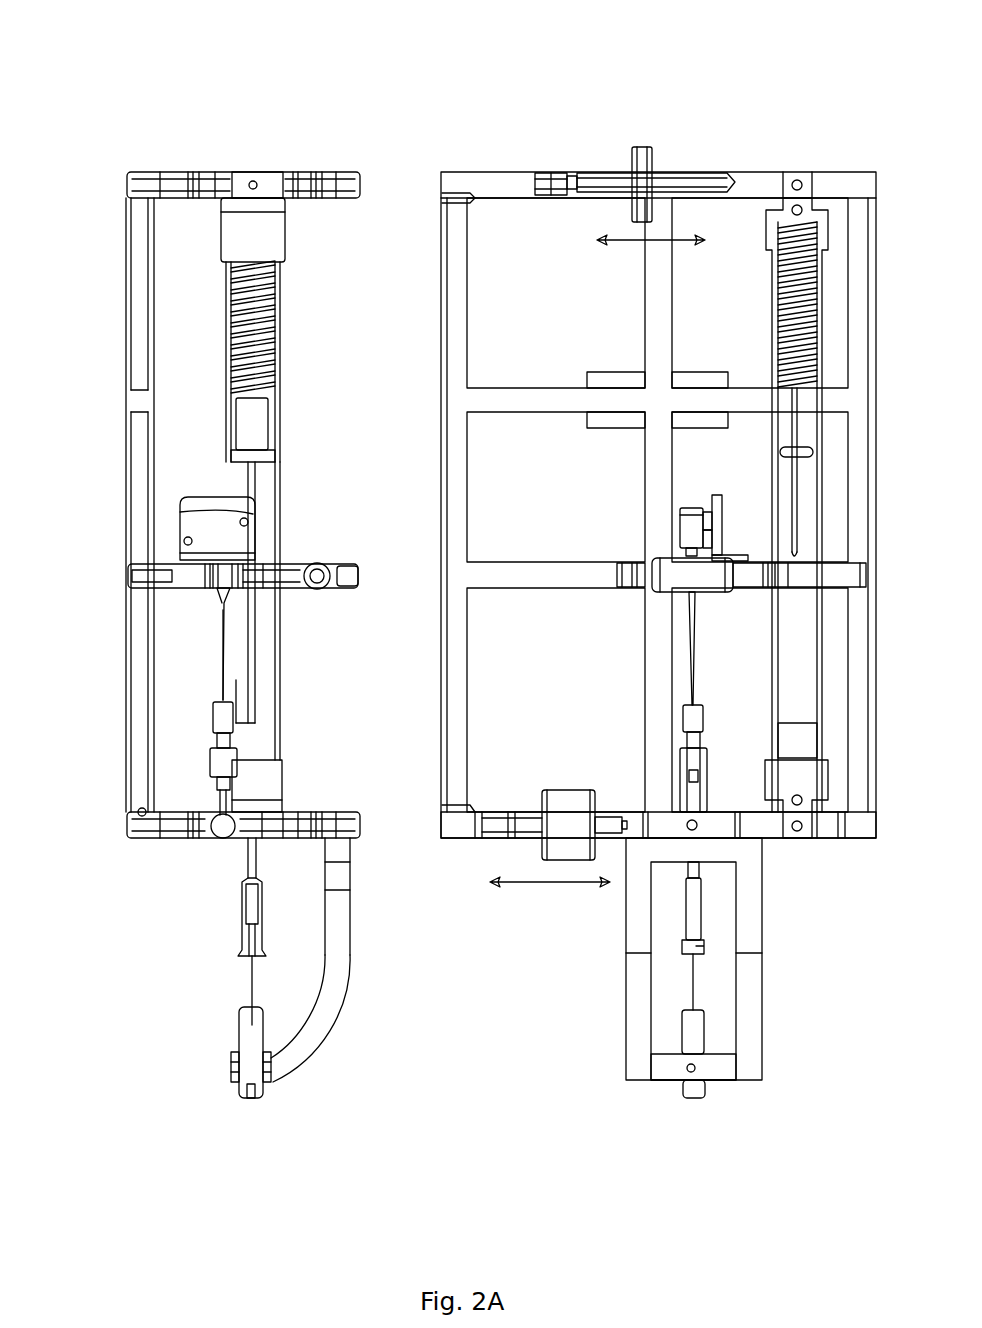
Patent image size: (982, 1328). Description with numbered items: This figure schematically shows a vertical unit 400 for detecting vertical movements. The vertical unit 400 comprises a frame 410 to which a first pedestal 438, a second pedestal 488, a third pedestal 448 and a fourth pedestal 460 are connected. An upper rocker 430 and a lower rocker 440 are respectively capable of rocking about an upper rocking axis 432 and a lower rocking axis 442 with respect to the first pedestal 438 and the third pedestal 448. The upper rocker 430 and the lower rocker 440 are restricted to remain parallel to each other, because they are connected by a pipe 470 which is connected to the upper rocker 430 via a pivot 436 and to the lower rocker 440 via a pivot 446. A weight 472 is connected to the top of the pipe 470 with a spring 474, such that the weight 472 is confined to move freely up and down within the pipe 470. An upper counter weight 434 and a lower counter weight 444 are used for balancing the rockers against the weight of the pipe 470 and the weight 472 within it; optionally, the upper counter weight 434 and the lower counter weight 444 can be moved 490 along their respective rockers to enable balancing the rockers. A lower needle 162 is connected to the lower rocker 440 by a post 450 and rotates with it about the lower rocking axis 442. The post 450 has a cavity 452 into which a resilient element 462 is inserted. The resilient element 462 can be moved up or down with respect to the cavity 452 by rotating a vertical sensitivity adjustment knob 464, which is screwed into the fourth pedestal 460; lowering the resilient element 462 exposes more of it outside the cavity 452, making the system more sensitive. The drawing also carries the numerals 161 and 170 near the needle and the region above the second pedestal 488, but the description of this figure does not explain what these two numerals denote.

The vertical unit 400 is at (498, 66).
The frame 410 is at (138, 172).
The upper rocker 430 is at (756, 172).
The upper rocking axis 432 is at (680, 166).
The upper counter weight 434 is at (628, 157).
The pivot 436 is at (800, 172).
The first pedestal 438 is at (548, 198).
The lower rocker 440 is at (470, 845).
The lower rocking axis 442 is at (213, 770).
The lower counter weight 444 is at (568, 800).
The pivot 446 is at (800, 845).
The third pedestal 448 is at (125, 840).
The post 450 is at (236, 850).
The cavity 452 is at (256, 903).
The fourth pedestal 460 is at (325, 1032).
The resilient element 462 is at (262, 948).
The vertical sensitivity adjustment knob 464 is at (239, 1035).
The pipe 470 is at (283, 307).
The weight 472 is at (772, 435).
The spring 474 is at (770, 322).
The second pedestal 488 is at (342, 564).
The movement of counter weights 490 is at (628, 243).
The cable 161 is at (222, 625).
The lower needle 162 is at (222, 672).
The latch mechanism 170 is at (198, 442).